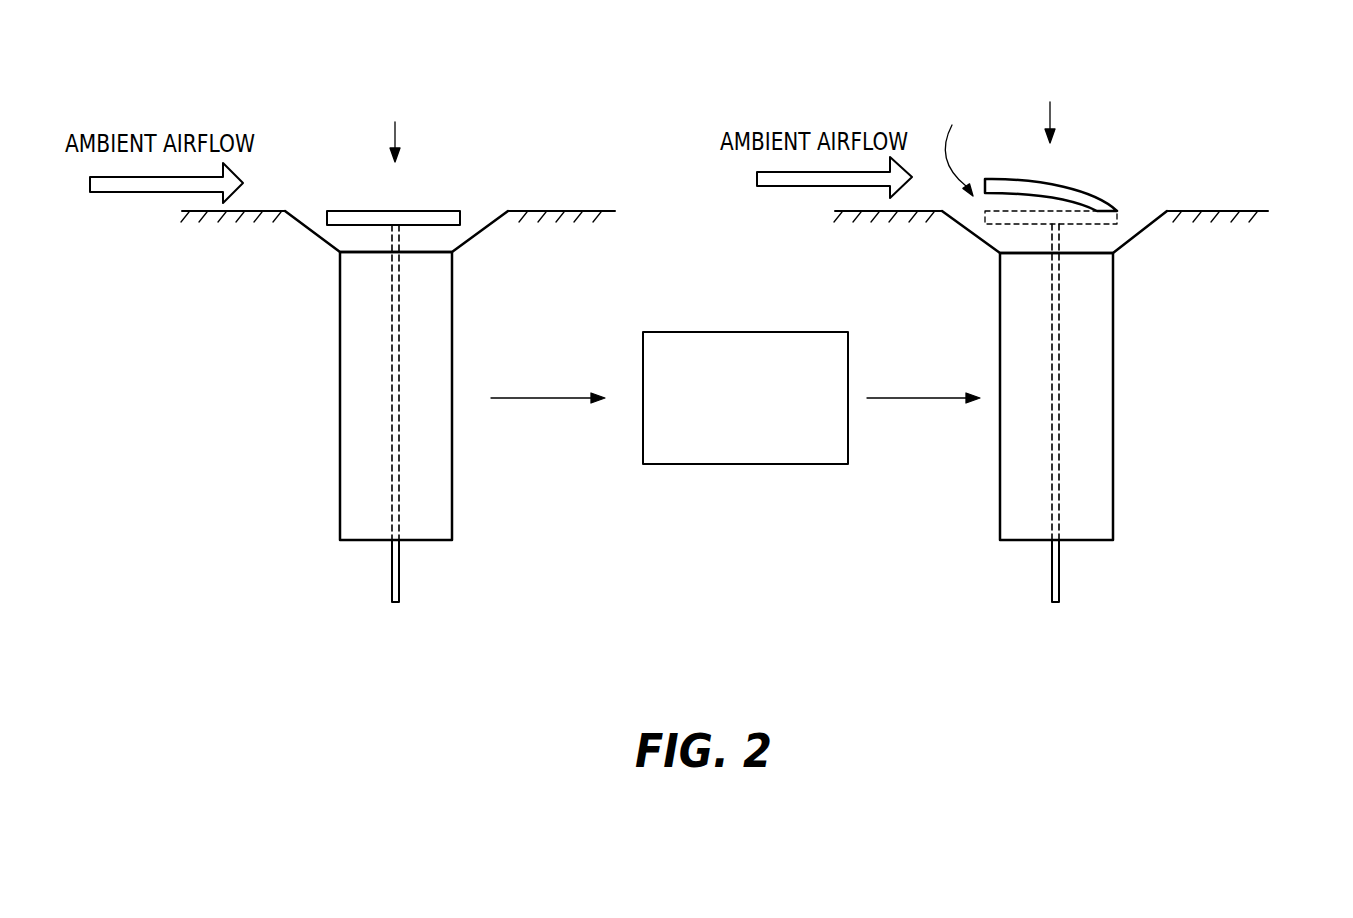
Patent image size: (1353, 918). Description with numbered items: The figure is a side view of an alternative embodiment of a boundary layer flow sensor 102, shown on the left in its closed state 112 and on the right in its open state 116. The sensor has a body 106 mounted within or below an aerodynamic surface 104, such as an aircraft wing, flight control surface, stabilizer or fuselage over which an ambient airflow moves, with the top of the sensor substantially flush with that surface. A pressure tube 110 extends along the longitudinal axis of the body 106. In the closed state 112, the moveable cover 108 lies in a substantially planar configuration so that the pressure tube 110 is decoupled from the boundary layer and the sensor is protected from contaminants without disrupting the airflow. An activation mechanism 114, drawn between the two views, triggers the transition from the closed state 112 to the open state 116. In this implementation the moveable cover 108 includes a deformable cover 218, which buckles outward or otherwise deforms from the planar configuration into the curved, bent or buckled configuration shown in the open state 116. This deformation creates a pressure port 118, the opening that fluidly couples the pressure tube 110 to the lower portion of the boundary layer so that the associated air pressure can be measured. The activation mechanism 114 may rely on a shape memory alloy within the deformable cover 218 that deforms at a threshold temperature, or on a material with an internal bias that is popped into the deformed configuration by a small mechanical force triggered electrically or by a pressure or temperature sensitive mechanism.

The boundary layer flow sensor 102 is at (180, 59).
The aerodynamic surface 104 is at (533, 210).
The body 106 is at (347, 313).
The moveable cover 108 is at (427, 222).
The pressure tube 110 is at (393, 368).
The closed state 112 is at (396, 126).
The activation mechanism 114 is at (745, 398).
The open state 116 is at (1051, 108).
The pressure port 118 is at (956, 145).
The deformable cover 218 is at (1063, 188).